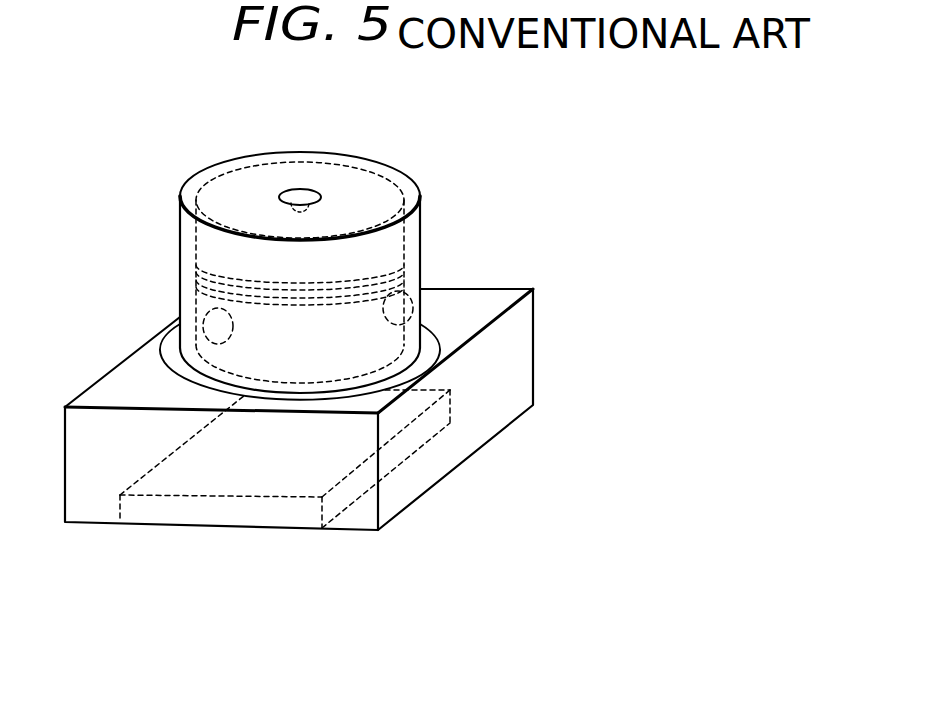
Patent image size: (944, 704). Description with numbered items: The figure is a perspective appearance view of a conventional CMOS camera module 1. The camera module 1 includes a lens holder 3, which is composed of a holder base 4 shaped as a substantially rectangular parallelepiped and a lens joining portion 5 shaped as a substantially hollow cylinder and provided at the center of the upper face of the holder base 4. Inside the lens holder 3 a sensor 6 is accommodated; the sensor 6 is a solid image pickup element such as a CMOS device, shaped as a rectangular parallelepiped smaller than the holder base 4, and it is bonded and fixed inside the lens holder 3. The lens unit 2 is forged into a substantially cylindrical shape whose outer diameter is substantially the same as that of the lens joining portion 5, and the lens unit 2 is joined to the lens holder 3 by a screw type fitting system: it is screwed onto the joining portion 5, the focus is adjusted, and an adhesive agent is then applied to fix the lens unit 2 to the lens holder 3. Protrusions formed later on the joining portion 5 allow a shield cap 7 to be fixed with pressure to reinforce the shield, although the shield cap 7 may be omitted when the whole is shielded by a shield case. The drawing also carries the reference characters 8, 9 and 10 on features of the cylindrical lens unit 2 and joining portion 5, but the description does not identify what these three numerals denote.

The camera module 1 is at (332, 138).
The lens unit 2 is at (259, 186).
The lens holder 3 is at (602, 303).
The holder base 4 is at (503, 402).
The lens joining portion 5 is at (383, 347).
The sensor 6 is at (360, 498).
The shield cap 7 is at (182, 229).
The side holes 8 is at (205, 325).
The internal grooves / rings 9 is at (213, 277).
The top sound hole 10 is at (320, 193).